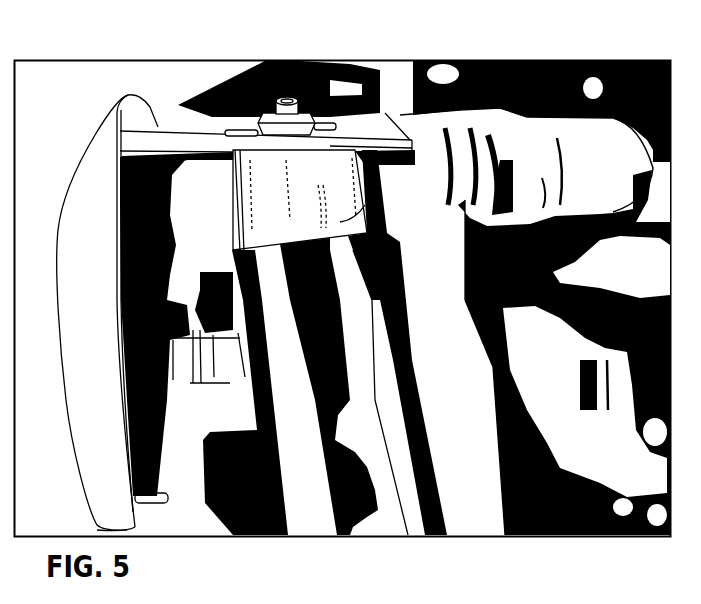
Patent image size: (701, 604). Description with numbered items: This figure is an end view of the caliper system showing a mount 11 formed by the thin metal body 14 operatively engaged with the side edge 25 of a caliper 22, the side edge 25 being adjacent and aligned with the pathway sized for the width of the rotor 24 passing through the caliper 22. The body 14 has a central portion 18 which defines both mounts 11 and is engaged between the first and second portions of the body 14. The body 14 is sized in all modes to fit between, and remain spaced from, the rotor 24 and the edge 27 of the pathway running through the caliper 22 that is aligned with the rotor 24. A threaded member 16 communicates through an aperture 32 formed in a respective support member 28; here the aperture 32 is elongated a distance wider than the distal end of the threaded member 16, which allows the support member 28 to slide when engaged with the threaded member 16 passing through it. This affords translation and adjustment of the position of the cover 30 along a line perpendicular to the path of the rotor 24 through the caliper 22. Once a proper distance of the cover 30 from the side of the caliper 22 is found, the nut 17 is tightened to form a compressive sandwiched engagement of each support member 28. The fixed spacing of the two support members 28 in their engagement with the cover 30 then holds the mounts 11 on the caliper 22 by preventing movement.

The mount 11 is at (333, 183).
The body 14 is at (243, 250).
The threaded member 16 is at (293, 98).
The nut 17 is at (348, 62).
The central portion 18 is at (377, 177).
The caliper 22 is at (198, 373).
The rotor 24 is at (310, 528).
The side edge 25 is at (230, 247).
The edge 27 is at (233, 208).
The support member 28 is at (186, 132).
The cover 30 is at (100, 160).
The aperture 32 is at (240, 61).